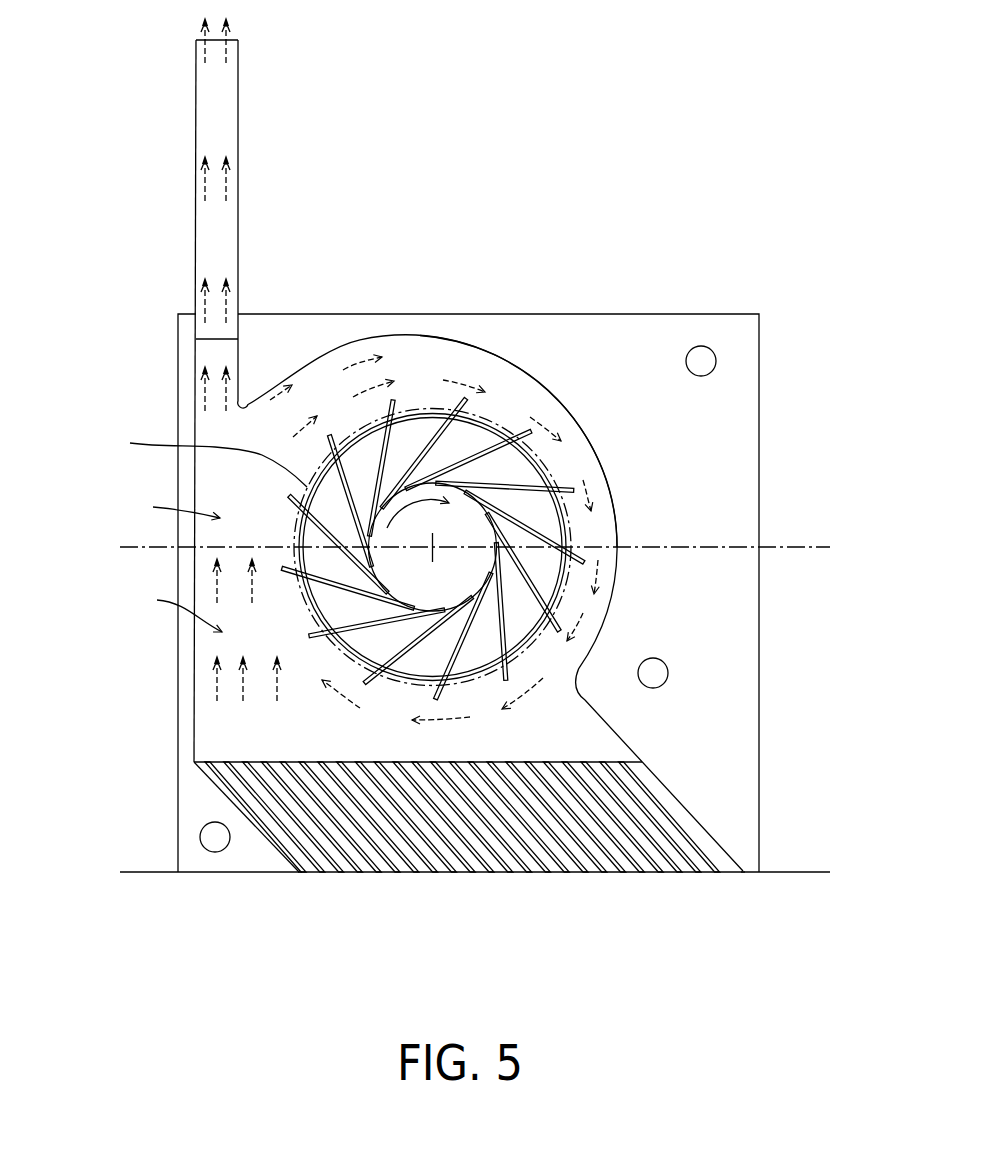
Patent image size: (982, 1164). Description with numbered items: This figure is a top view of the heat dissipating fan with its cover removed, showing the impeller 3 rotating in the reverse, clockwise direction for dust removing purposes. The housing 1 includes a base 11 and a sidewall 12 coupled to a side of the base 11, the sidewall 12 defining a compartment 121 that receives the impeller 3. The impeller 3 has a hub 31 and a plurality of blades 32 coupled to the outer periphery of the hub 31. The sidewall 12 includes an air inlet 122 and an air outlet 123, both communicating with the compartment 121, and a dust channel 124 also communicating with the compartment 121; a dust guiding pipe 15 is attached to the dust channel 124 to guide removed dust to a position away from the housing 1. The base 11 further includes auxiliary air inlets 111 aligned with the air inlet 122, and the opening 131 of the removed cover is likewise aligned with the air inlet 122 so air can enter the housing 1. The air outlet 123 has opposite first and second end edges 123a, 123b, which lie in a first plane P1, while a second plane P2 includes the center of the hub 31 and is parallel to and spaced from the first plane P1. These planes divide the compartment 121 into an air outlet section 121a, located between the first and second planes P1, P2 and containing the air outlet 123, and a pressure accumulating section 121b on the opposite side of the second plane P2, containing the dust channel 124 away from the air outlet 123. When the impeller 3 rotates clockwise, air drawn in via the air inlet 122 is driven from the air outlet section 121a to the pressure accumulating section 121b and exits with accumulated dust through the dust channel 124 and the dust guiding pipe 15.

The housing 1 is at (172, 290).
The impeller 3 is at (347, 476).
The base 11 is at (407, 370).
The sidewall 12 is at (185, 662).
The dust guiding pipe 15 is at (228, 111).
The hub 31 is at (393, 493).
The blades 32 is at (328, 436).
The auxiliary air inlets 111 is at (196, 459).
The compartment 121 is at (92, 500).
The air outlet section 121a is at (161, 610).
The pressure accumulating section 121b is at (157, 506).
The air inlet 122 is at (596, 444).
The air outlet 123 is at (552, 876).
The first end edge 123a is at (300, 872).
The second end edge 123b is at (742, 872).
The dust channel 124 is at (207, 353).
The opening 131 is at (430, 408).
The first plane P1 is at (800, 872).
The second plane P2 is at (813, 547).